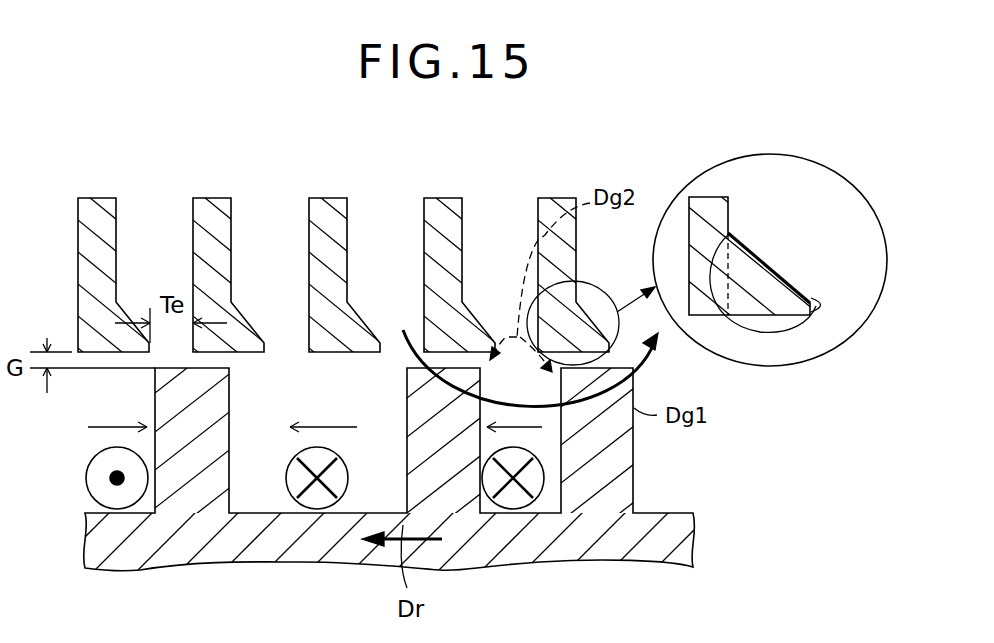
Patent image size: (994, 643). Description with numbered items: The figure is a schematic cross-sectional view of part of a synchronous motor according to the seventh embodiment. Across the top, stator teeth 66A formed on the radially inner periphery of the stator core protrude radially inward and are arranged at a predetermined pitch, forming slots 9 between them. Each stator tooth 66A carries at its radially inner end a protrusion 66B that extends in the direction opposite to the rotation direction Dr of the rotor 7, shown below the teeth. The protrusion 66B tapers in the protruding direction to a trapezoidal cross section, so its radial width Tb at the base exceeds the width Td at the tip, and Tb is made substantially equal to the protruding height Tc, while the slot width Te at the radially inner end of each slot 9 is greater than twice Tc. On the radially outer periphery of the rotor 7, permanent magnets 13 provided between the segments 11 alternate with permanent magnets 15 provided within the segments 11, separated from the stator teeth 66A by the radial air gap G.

The stator teeth 66A is at (207, 205).
The slots 9 is at (278, 302).
The protrusion 66B is at (363, 333).
The permanent magnets 13 is at (113, 393).
The segments 11 is at (185, 463).
The permanent magnets 15 is at (273, 390).
The rotor 7 is at (558, 548).